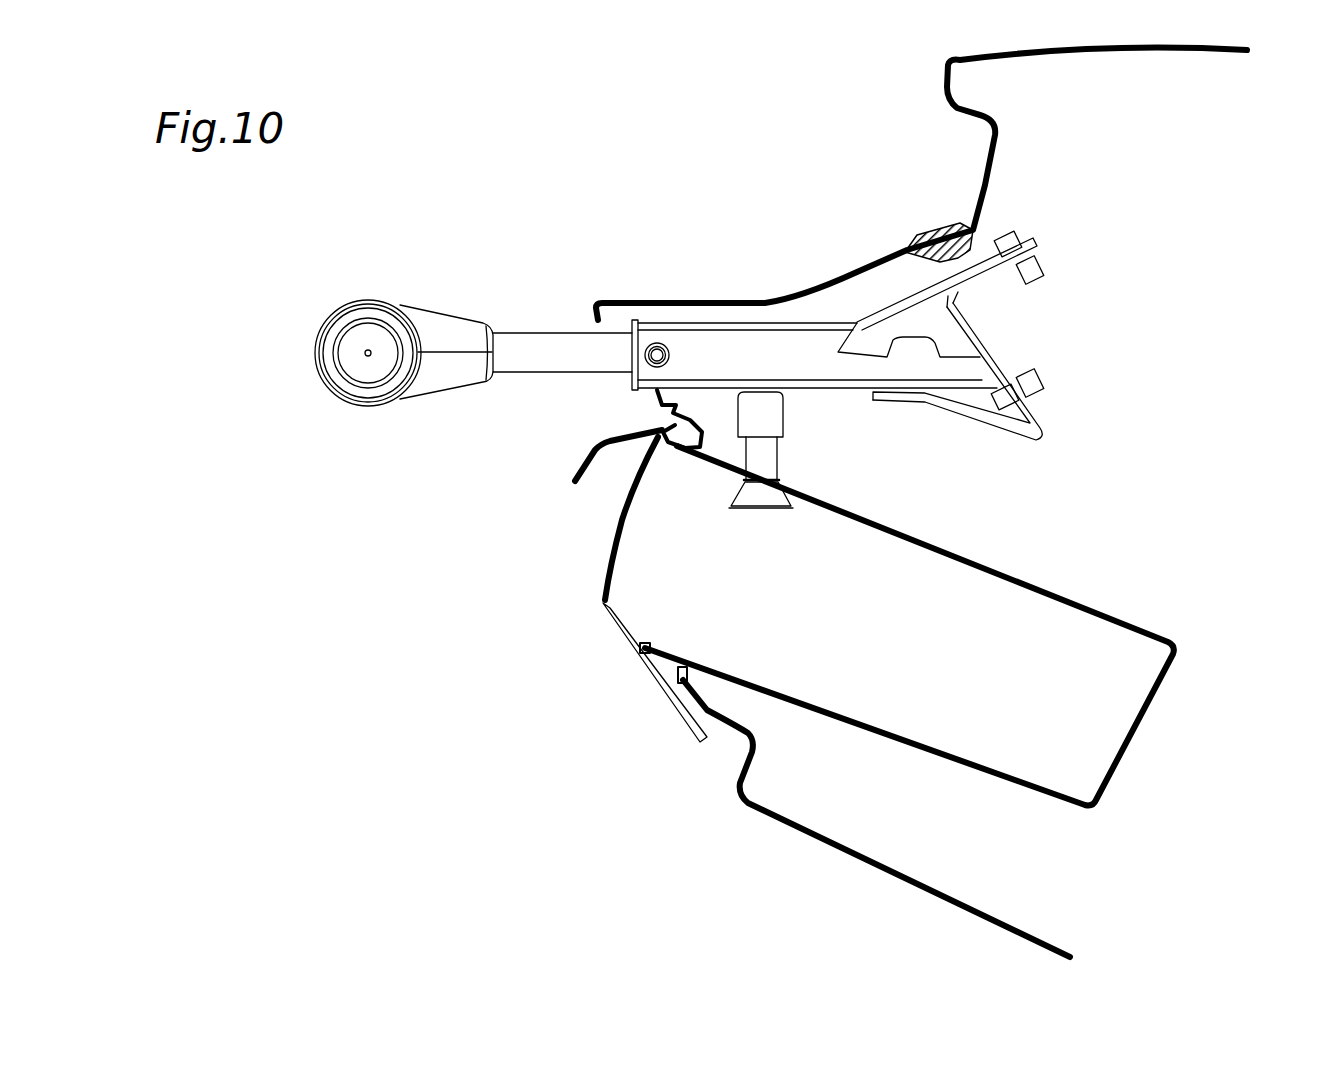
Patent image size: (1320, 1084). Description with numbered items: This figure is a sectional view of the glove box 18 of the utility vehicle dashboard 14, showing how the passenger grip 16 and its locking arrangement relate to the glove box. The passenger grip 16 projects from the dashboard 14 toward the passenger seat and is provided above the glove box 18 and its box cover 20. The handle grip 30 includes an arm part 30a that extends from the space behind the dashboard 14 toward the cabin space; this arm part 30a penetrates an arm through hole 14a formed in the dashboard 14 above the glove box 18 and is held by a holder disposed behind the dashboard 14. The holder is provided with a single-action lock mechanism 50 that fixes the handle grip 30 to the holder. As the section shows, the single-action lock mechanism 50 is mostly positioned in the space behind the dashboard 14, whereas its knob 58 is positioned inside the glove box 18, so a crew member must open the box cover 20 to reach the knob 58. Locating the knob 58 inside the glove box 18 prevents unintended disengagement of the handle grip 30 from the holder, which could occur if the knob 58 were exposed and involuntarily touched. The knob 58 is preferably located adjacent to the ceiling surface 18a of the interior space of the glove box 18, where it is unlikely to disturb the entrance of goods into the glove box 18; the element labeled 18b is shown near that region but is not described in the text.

The dashboard 14 is at (857, 273).
The arm through hole 14a is at (1131, 331).
The passenger grip 16 is at (473, 359).
The glove box 18 is at (907, 701).
The ceiling surface 18a is at (1020, 583).
The clip 18b is at (733, 470).
The box cover 20 is at (607, 572).
The handle grip 30 is at (410, 303).
The arm part 30a is at (533, 333).
The single-action lock mechanism 50 is at (814, 460).
The knob 58 is at (758, 512).